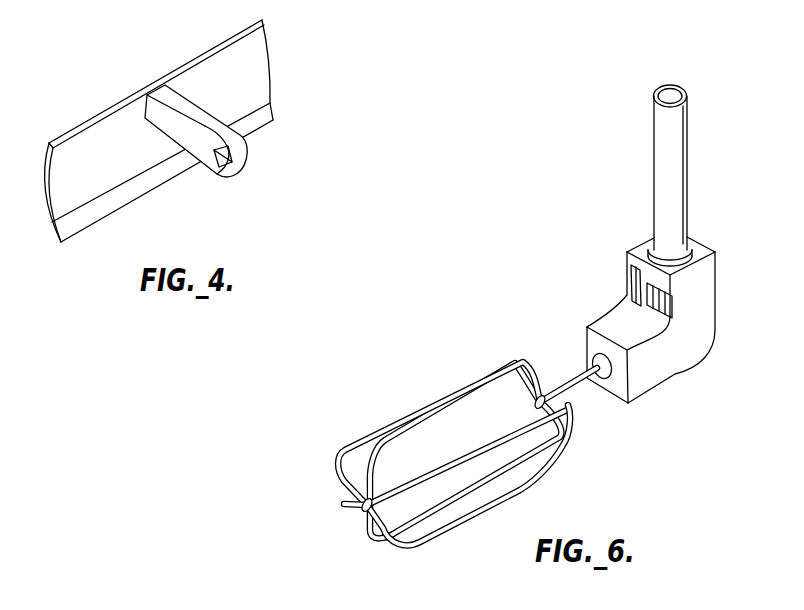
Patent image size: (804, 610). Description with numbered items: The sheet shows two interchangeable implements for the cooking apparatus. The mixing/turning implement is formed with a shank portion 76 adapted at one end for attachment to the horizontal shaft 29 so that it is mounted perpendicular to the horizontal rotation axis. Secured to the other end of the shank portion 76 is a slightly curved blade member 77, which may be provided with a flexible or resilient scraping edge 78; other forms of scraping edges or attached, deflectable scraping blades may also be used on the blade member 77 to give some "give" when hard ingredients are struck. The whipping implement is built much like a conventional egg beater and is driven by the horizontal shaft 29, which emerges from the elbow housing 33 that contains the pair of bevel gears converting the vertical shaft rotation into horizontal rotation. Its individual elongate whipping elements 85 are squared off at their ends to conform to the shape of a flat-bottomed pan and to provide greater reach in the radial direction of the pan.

In FIG. 4, the shank portion 76 is at (207, 110).
In FIG. 4, the blade member 77 is at (53, 197).
In FIG. 4, the scraping edge 78 is at (143, 197).
In FIG. 6, the horizontal shaft 29 is at (574, 371).
In FIG. 6, the elbow housing 33 is at (717, 315).
In FIG. 6, the whipping elements 85 is at (437, 535).